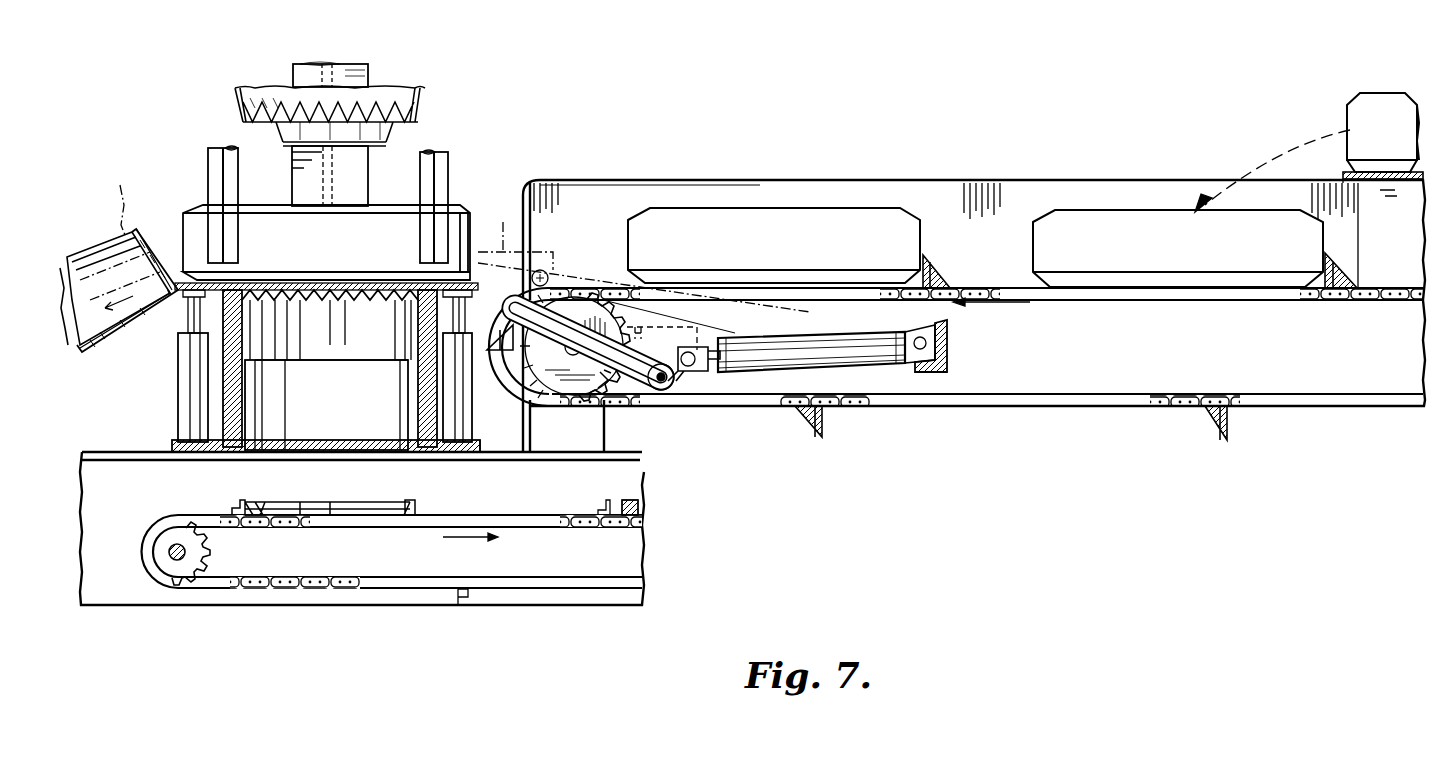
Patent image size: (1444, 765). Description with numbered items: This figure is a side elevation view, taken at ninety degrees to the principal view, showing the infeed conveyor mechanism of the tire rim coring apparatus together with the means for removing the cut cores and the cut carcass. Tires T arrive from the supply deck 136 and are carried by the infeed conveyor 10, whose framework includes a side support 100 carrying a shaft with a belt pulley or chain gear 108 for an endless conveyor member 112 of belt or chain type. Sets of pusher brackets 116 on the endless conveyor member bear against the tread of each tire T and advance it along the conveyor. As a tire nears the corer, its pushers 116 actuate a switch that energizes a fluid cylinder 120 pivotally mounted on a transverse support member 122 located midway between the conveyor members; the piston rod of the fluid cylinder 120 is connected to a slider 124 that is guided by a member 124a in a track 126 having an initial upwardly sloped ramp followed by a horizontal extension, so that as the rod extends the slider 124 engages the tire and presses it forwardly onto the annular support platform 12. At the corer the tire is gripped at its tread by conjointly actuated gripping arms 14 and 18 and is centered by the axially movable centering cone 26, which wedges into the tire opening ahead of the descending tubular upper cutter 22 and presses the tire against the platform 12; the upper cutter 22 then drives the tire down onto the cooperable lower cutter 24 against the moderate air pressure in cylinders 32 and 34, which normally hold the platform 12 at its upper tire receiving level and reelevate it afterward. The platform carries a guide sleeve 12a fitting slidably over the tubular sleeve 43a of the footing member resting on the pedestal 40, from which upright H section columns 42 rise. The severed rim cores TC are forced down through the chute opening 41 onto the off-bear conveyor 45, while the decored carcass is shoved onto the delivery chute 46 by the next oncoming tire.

The infeed conveyor 10 is at (750, 172).
The annular support platform 12 is at (180, 268).
The guide sleeve 12a is at (225, 318).
The gripping arm 14 is at (445, 158).
The gripping arm 18 is at (215, 150).
The upper cutter 22 is at (423, 112).
The lower cutter 24 is at (405, 298).
The centering cone 26 is at (367, 160).
The pneumatic cylinder 32 is at (465, 404).
The pneumatic cylinder 34 is at (178, 398).
The pedestal 40 is at (510, 455).
The chute opening 41 is at (378, 416).
The H section column 42 is at (367, 70).
The tubular sleeve 43a is at (410, 432).
The off-bear conveyor 45 is at (205, 520).
The delivery chute 46 is at (140, 322).
The side support 100 is at (992, 180).
The belt pulley or chain gear 108 is at (608, 382).
The endless conveyor member 112 is at (998, 286).
The pusher bracket 116 is at (1228, 420).
The fluid cylinder 120 is at (772, 355).
The transverse support member 122 is at (950, 350).
The slider 124 is at (683, 428).
The guide member 124a is at (655, 392).
The track 126 is at (585, 332).
The supply deck 136 is at (1393, 185).
The tire T is at (828, 148).
The rim core TC is at (410, 505).